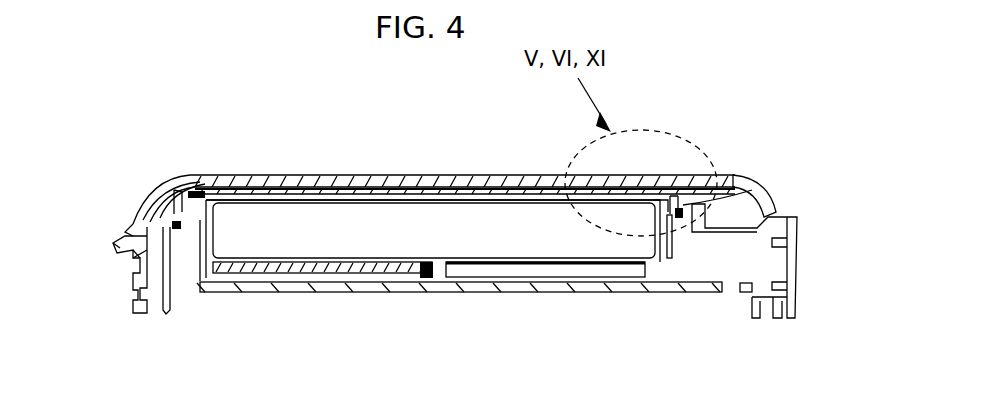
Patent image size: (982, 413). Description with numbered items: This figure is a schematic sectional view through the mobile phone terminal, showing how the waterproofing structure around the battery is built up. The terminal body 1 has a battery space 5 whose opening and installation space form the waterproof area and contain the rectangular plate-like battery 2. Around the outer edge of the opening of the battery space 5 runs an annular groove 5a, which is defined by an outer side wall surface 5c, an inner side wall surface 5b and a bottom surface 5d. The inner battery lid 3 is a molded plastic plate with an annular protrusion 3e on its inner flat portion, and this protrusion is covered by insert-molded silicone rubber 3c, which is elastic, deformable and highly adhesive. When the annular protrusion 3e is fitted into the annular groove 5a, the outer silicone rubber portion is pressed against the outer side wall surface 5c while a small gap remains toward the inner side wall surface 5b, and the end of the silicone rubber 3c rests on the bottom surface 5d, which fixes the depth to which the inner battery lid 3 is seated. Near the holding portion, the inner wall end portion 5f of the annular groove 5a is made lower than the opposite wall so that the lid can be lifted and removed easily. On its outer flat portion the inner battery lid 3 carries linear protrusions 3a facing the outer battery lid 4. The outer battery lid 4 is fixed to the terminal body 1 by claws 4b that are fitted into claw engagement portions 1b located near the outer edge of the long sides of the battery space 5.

The terminal body 1 is at (135, 310).
The claw engagement portion 1b is at (138, 257).
The battery 2 is at (322, 266).
The inner battery lid 3 is at (458, 183).
The linear protrusion 3a is at (300, 186).
The silicone rubber 3c is at (712, 178).
The annular protrusion 3e is at (177, 200).
The outer battery lid 4 is at (360, 186).
The claw 4b is at (128, 228).
The battery space 5 is at (427, 279).
The annular groove 5a is at (180, 230).
The inner side wall surface 5b is at (200, 188).
The outer side wall surface 5c is at (155, 196).
The bottom surface 5d is at (167, 315).
The inner wall end portion 5f is at (235, 197).